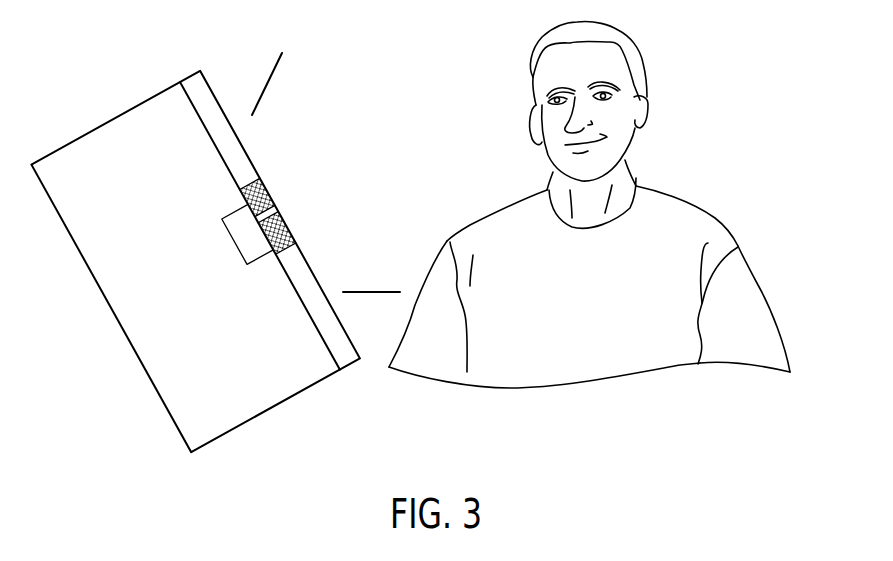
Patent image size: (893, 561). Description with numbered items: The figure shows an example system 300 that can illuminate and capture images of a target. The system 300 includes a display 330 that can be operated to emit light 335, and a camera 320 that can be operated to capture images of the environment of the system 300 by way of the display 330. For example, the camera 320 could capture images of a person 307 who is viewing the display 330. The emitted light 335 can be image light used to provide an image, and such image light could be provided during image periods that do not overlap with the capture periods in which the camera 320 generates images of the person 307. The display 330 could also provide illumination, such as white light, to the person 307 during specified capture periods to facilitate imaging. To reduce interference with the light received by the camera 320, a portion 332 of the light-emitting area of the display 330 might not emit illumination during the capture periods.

The system 300 is at (142, 87).
The person 307 is at (640, 46).
The camera 320 is at (247, 265).
The display 330 is at (320, 338).
The portion of the light-emitting area 332 is at (285, 238).
The emitted light 335 is at (283, 137).